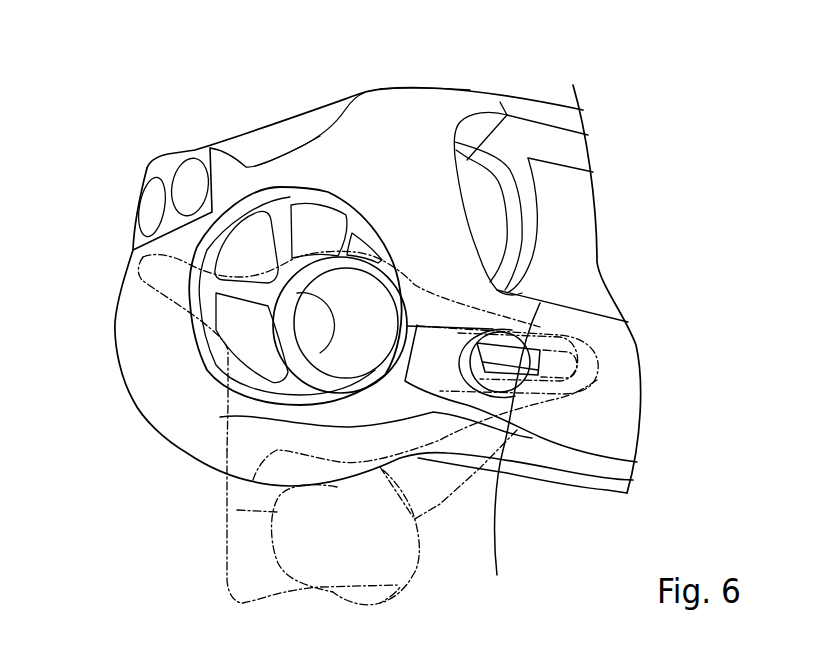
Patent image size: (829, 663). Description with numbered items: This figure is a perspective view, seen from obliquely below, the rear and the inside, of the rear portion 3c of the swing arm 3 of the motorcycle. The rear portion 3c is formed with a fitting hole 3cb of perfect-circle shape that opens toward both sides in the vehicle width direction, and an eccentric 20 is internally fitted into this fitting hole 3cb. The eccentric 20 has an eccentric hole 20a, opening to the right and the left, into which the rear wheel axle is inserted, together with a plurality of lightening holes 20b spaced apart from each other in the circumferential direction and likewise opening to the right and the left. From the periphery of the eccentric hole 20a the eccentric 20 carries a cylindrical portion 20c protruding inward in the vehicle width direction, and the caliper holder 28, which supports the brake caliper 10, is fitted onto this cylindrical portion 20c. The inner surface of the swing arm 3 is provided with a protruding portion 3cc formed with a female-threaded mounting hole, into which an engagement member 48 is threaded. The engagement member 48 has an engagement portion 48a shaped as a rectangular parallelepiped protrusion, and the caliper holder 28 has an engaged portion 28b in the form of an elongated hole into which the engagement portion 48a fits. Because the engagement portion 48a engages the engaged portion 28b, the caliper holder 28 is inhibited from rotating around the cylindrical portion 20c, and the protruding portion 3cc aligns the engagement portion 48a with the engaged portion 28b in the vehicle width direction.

The swing arm 3 is at (547, 101).
The rear portion of the swing arm 3c is at (410, 88).
The fitting hole 3cb is at (310, 195).
The protruding portion 3cc is at (497, 570).
The eccentric 20 is at (247, 210).
The eccentric hole 20a is at (317, 333).
The lightening holes 20b is at (245, 259).
The cylindrical portion 20c is at (220, 417).
The caliper holder 28 is at (227, 450).
The engaged portion 28b is at (600, 342).
The brake caliper 10 is at (227, 542).
The engagement member 48 is at (491, 405).
The engagement portion 48a is at (515, 363).